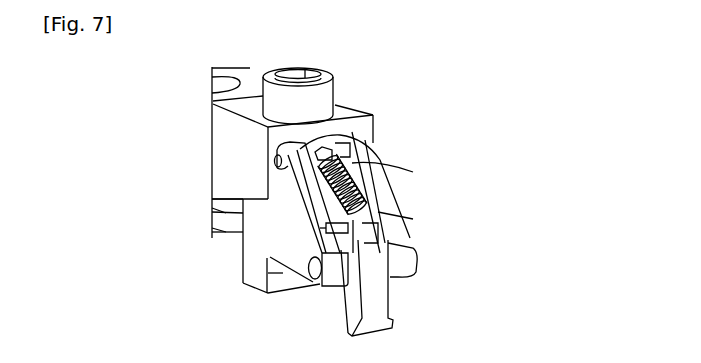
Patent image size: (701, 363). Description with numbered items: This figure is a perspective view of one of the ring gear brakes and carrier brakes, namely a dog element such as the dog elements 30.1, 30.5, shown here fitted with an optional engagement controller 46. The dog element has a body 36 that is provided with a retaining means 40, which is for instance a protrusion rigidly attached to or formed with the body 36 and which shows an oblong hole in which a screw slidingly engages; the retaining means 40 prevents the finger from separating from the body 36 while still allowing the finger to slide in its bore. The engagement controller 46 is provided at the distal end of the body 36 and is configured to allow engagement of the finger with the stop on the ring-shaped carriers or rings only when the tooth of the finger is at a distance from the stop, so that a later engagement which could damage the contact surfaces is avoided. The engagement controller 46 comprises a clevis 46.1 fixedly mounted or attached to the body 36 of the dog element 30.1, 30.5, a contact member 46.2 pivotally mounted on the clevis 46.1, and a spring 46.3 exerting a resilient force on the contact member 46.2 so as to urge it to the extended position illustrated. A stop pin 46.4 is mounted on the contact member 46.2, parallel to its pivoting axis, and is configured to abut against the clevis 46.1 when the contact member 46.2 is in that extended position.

The body 36 is at (213, 159).
The dog element 30.1 is at (171, 181).
The dog element 30.5 is at (150, 201).
The retaining means 40 is at (380, 120).
The engagement controller 46 is at (445, 262).
The clevis 46.1 is at (388, 243).
The contact member 46.2 is at (375, 297).
The spring 46.3 is at (382, 163).
The stop pin 46.4 is at (382, 218).